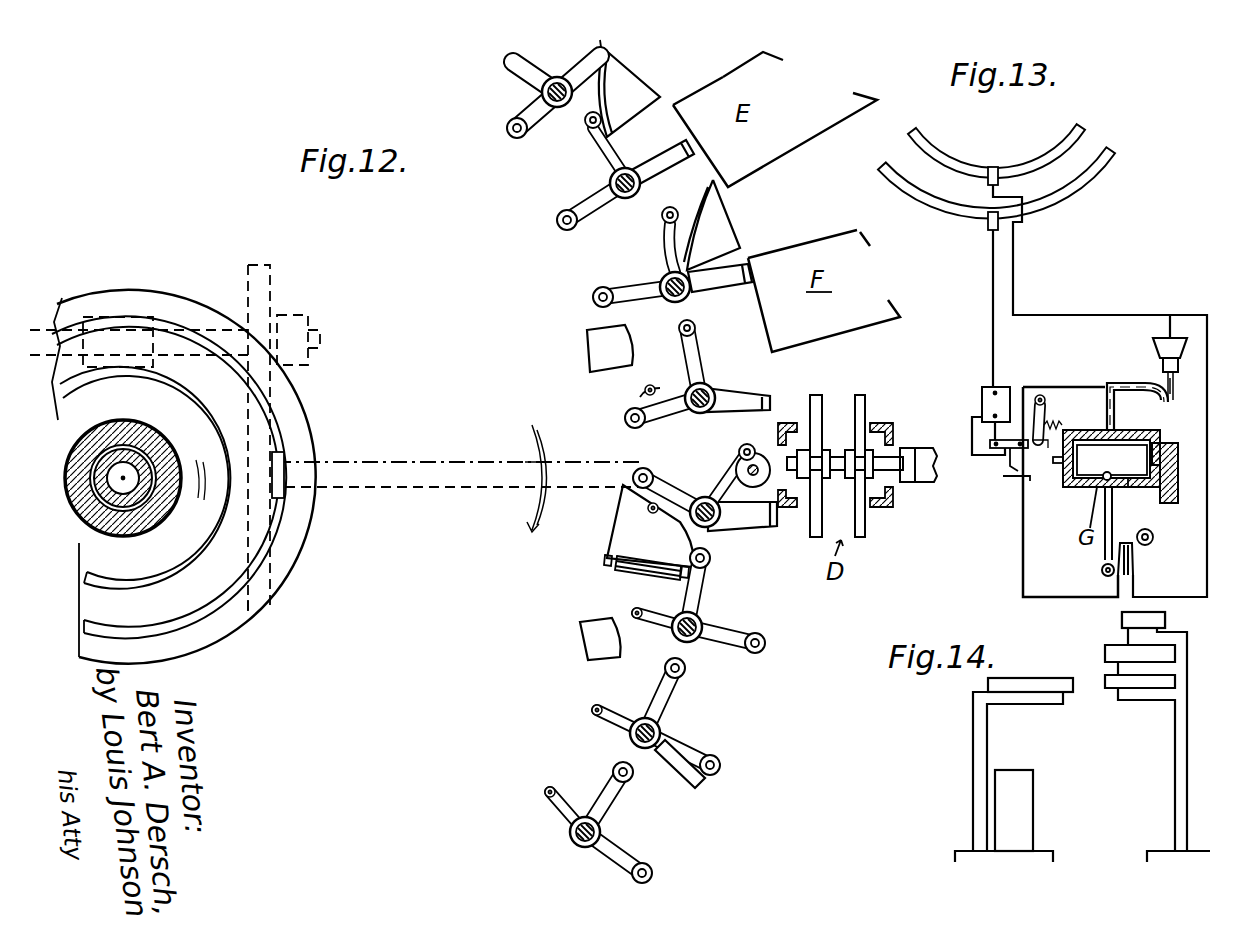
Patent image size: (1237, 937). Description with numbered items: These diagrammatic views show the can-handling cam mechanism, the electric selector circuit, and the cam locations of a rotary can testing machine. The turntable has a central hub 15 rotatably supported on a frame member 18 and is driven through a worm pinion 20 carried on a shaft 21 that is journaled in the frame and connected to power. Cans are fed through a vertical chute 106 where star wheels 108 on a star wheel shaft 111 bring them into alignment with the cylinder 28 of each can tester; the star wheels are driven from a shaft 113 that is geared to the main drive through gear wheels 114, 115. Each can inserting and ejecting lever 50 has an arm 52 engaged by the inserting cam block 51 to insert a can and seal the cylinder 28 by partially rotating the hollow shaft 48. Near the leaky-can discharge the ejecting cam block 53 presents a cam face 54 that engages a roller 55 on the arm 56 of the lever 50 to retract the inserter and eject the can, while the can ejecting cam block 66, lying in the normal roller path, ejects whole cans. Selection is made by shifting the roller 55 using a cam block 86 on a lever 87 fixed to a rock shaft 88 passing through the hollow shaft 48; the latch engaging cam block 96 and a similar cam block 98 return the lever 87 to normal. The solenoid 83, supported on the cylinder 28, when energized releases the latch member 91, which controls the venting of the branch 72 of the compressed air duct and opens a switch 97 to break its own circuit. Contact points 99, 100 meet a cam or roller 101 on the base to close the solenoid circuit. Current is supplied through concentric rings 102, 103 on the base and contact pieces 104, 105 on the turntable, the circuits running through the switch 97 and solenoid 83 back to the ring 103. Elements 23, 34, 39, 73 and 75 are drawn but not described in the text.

In FIG. 12, the central hub 15 is at (143, 520).
In FIG. 12, the frame member 18 is at (205, 645).
In FIG. 12, the worm pinion 20 is at (130, 318).
In FIG. 12, the shaft 21 is at (213, 326).
In FIG. 12, the axle 23 is at (121, 508).
In FIG. 13, the cylinder 28 is at (1083, 490).
In FIG. 13, the cylinder wall 34 is at (1128, 490).
In FIG. 13, the piston 39 is at (1178, 465).
In FIG. 12, the hollow shaft 48 is at (576, 850).
In FIG. 12, the can inserting and ejecting lever 50 is at (637, 815).
In FIG. 12, the inserting cam block 51 is at (617, 534).
In FIG. 14, the inserting cam block 51 is at (1040, 678).
In FIG. 12, the arm 52 is at (662, 474).
In FIG. 12, the ejecting cam block 53 is at (640, 79).
In FIG. 14, the ejecting cam block 53 is at (1105, 652).
In FIG. 12, the cam face 54 is at (606, 92).
In FIG. 12, the roller 55 is at (584, 122).
In FIG. 12, the arm 56 is at (618, 145).
In FIG. 12, the can ejecting cam block 66 is at (730, 210).
In FIG. 14, the can ejecting cam block 66 is at (1110, 689).
In FIG. 13, the branch of compressed air duct 72 is at (1112, 410).
In FIG. 13, the nozzle 73 is at (1171, 407).
In FIG. 13, the funnel 75 is at (1153, 343).
In FIG. 13, the solenoid 83 is at (982, 396).
In FIG. 12, the cam block 86 is at (755, 274).
In FIG. 12, the lever 87 is at (700, 150).
In FIG. 12, the rock shaft 88 is at (570, 835).
In FIG. 13, the latch member 91 is at (1040, 452).
In FIG. 12, the latch engaging cam block 96 is at (580, 647).
In FIG. 14, the latch engaging cam block 96 is at (1023, 786).
In FIG. 13, the switch 97 is at (1006, 470).
In FIG. 12, the cam block 98 is at (588, 352).
In FIG. 12, the contact point 99 is at (716, 478).
In FIG. 13, the contact point 99 is at (1103, 556).
In FIG. 12, the contact point 100 is at (748, 488).
In FIG. 13, the contact point 100 is at (1133, 557).
In FIG. 12, the cam or roller 101 is at (753, 452).
In FIG. 13, the cam or roller 101 is at (1154, 537).
In FIG. 14, the cam or roller 101 is at (1120, 621).
In FIG. 12, the concentric ring 102 is at (152, 580).
In FIG. 13, the concentric ring 102 is at (1082, 126).
In FIG. 12, the concentric ring 103 is at (158, 630).
In FIG. 13, the concentric ring 103 is at (1115, 153).
In FIG. 13, the contact piece 104 is at (996, 167).
In FIG. 13, the contact piece 105 is at (988, 226).
In FIG. 12, the vertical chute 106 is at (884, 425).
In FIG. 12, the star wheel 108 is at (858, 395).
In FIG. 12, the star wheel shaft 111 is at (889, 468).
In FIG. 12, the shaft 113 is at (432, 488).
In FIG. 12, the gear wheel 114 is at (270, 610).
In FIG. 12, the gear wheel 115 is at (270, 280).